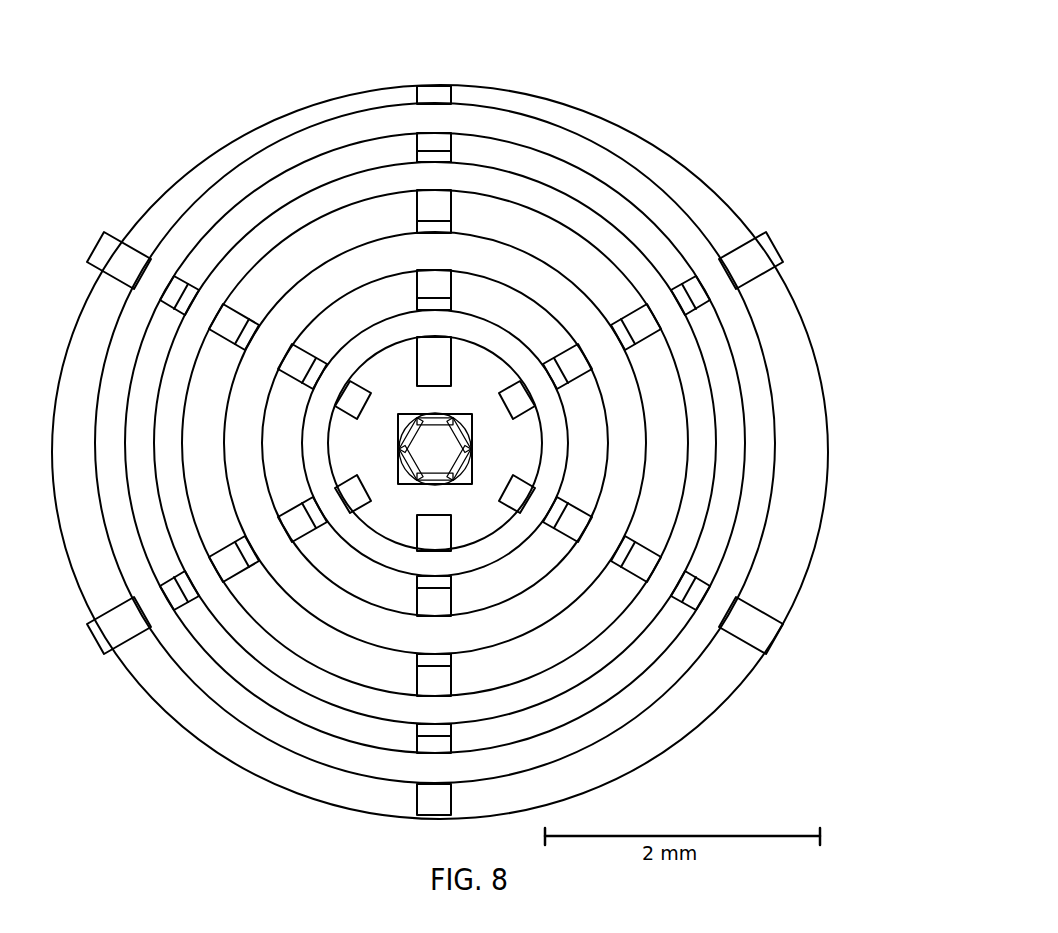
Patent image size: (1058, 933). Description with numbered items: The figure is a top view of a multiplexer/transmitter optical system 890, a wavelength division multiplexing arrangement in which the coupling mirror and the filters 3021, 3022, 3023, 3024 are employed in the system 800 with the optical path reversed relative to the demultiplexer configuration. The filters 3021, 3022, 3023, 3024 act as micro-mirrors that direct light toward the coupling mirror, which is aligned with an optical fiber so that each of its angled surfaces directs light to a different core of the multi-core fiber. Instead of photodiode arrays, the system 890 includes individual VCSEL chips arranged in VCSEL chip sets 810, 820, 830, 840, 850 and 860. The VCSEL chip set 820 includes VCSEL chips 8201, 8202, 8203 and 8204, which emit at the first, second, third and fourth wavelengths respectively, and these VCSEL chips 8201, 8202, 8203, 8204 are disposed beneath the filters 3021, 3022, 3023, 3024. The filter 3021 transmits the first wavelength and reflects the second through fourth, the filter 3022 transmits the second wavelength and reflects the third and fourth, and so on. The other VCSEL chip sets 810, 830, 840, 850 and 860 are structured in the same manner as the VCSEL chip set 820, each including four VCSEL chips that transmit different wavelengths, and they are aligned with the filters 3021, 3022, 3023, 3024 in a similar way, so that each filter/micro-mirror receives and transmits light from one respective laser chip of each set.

The multiplexer/transmitter optical system 890 is at (488, 37).
The system 800 is at (712, 188).
The VCSEL chip 8201 is at (567, 505).
The VCSEL chip 8202 is at (638, 550).
The VCSEL chip 8203 is at (690, 570).
The VCSEL chip 8204 is at (760, 615).
The VCSEL chip set 820 is at (773, 652).
The filter 3021 is at (475, 545).
The filter 3022 is at (557, 560).
The filter 3023 is at (573, 653).
The filter 3024 is at (603, 728).
The VCSEL chip set 850 is at (430, 88).
The VCSEL chip set 830 is at (432, 815).
The VCSEL chip set 810 is at (93, 247).
The VCSEL chip set 860 is at (777, 248).
The VCSEL chip set 840 is at (126, 662).